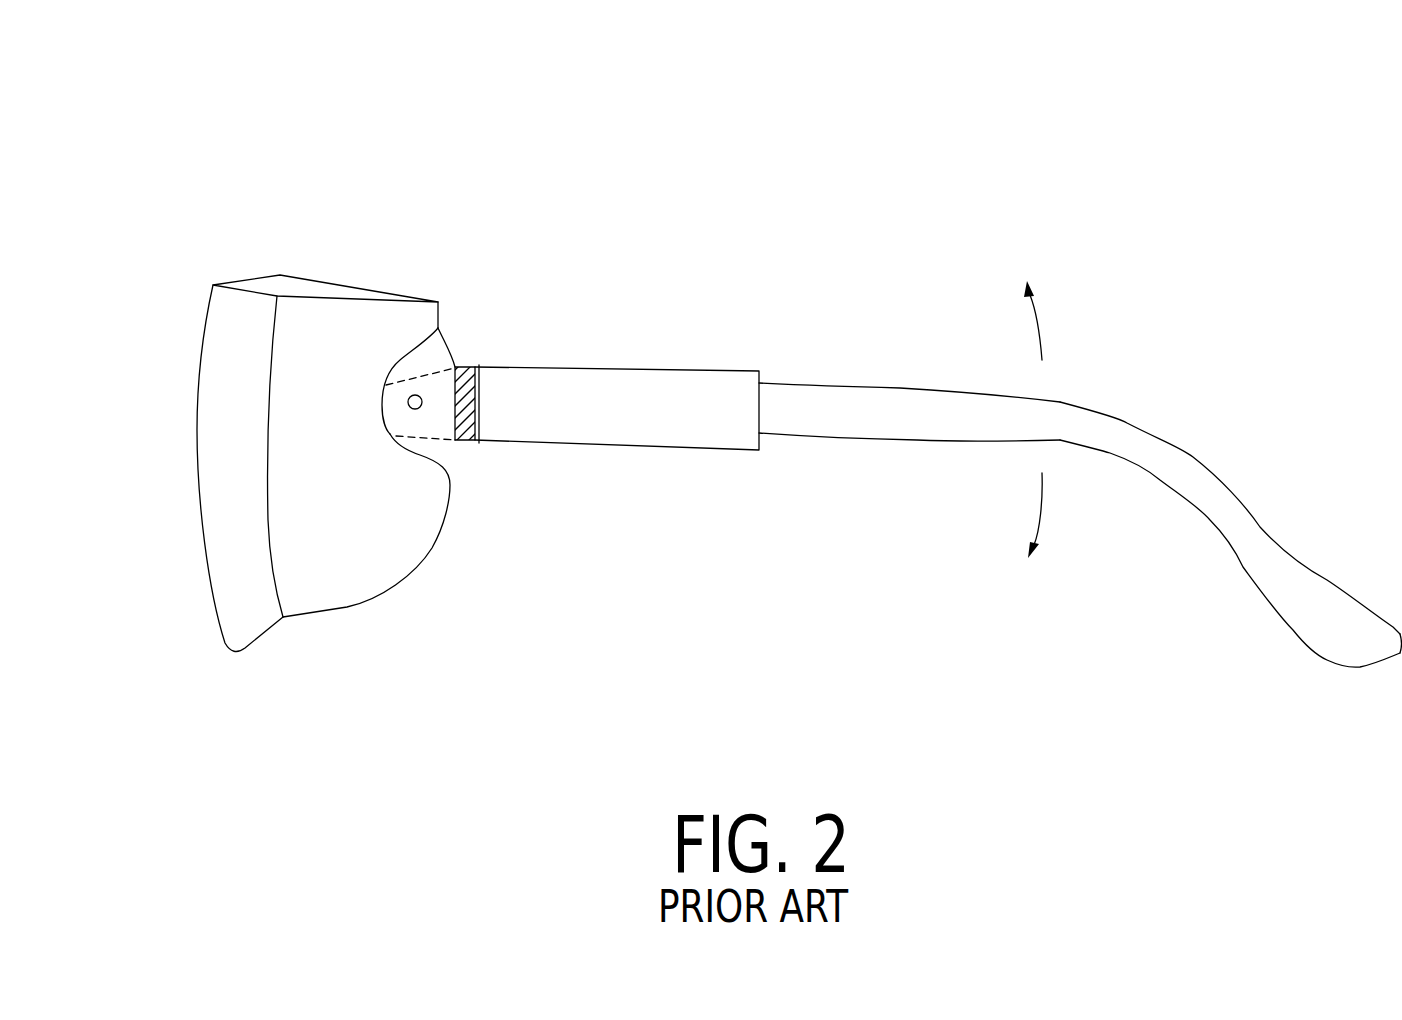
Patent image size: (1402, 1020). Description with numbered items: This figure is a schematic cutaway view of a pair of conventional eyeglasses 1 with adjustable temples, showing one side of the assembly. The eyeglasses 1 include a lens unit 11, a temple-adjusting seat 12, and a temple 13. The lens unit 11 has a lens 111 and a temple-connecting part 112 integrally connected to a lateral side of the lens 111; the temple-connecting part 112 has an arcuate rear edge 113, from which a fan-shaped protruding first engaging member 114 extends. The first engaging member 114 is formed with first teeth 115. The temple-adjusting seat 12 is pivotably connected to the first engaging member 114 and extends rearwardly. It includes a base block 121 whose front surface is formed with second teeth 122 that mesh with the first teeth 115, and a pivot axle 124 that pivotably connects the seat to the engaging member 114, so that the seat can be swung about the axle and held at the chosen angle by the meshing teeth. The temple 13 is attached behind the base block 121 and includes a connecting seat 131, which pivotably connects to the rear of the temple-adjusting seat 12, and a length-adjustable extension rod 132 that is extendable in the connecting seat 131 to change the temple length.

The eyeglasses 1 is at (275, 183).
The lens unit 11 is at (150, 459).
The lens 111 is at (203, 553).
The temple-connecting part 112 is at (322, 577).
The arcuate rear edge 113 is at (383, 390).
The first engaging member 114 is at (424, 354).
The first teeth 115 is at (458, 411).
The temple-adjusting seat 12 is at (461, 327).
The base block 121 is at (482, 400).
The second teeth 122 is at (455, 411).
The pivot axle 124 is at (412, 409).
The temple 13 is at (982, 308).
The connecting seat 131 is at (723, 397).
The length-adjustable extension rod 132 is at (905, 403).